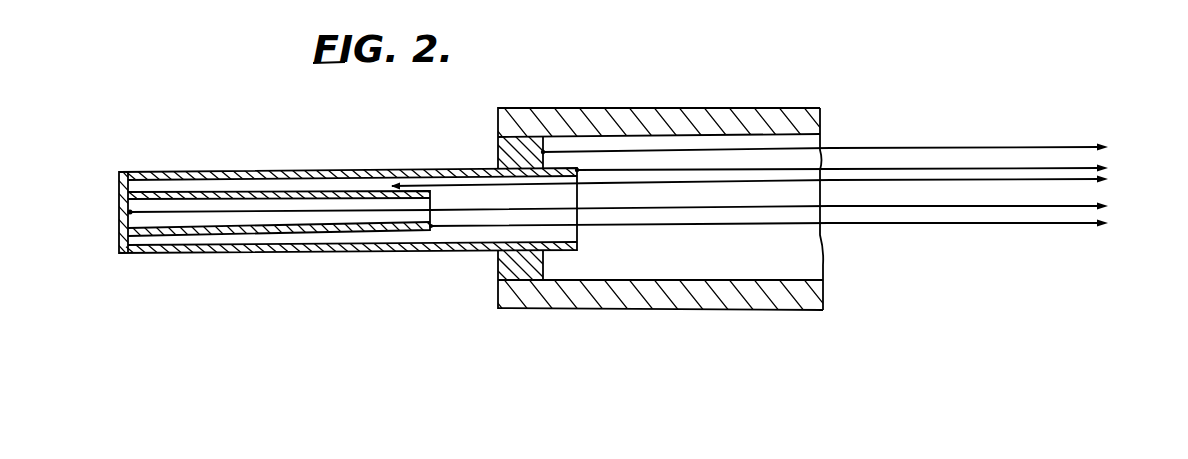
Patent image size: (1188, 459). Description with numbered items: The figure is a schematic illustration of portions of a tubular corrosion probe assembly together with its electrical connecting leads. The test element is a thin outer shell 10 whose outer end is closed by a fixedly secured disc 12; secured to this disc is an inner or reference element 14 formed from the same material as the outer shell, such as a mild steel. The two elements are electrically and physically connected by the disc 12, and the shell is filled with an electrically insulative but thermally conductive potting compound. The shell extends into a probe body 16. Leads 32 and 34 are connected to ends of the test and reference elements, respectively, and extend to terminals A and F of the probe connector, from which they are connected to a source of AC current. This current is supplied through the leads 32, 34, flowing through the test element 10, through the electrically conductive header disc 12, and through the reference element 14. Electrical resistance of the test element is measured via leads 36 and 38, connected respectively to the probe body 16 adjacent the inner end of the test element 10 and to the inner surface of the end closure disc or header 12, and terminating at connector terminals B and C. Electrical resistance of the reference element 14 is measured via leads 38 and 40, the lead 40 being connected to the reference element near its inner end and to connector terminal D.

The outer shell 10 is at (316, 170).
The disc 12 is at (120, 177).
The reference element 14 is at (303, 237).
The probe body 16 is at (667, 108).
The lead 32 is at (864, 156).
The lead 34 is at (865, 224).
The lead 36 is at (853, 148).
The lead 38 is at (914, 191).
The lead 40 is at (848, 181).